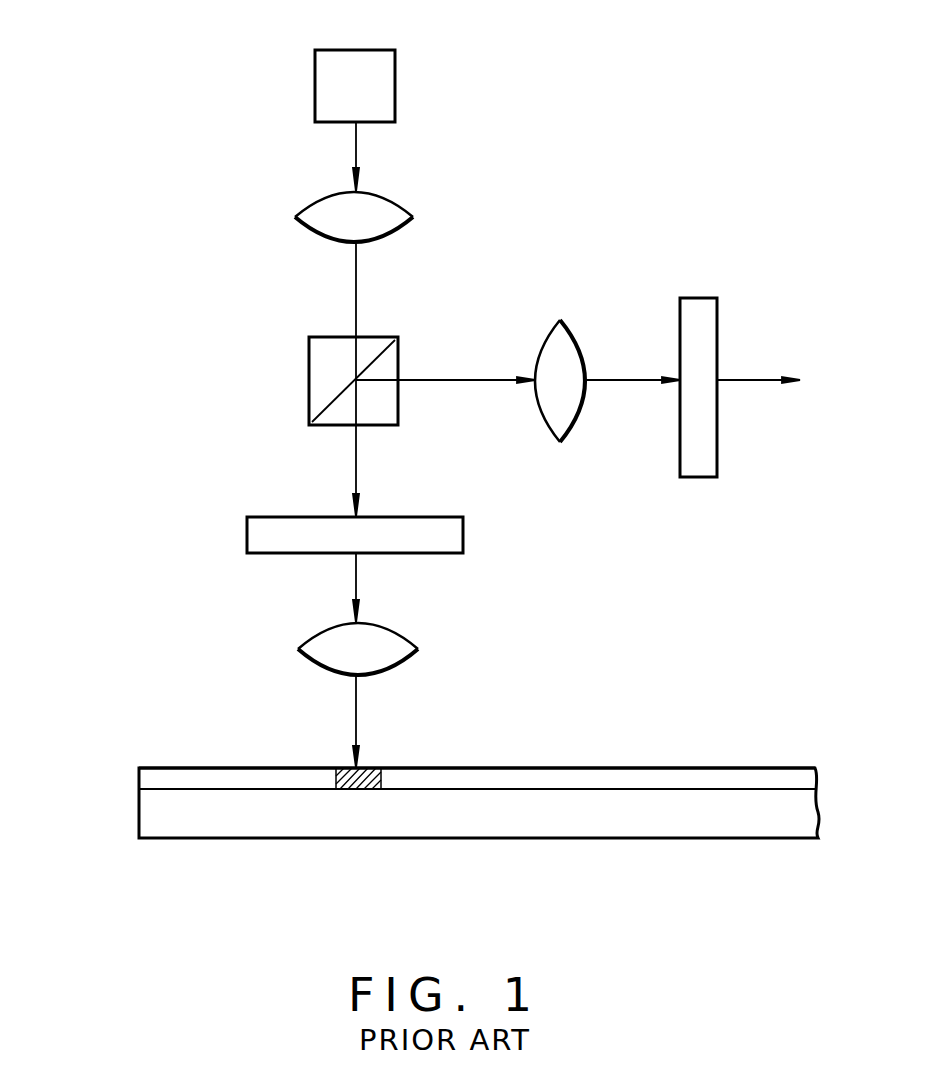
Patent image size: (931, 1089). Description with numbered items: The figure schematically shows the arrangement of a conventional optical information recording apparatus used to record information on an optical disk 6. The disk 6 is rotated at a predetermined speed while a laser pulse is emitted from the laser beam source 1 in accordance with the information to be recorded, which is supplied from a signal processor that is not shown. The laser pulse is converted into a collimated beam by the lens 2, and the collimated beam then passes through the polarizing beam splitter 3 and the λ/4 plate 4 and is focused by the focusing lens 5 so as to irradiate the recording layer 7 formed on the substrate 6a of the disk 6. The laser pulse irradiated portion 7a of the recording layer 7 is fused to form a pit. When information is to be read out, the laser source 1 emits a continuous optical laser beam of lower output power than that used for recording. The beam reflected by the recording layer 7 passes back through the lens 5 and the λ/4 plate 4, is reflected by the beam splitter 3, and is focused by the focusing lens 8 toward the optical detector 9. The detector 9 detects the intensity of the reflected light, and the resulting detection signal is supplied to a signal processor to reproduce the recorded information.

The laser beam source 1 is at (395, 78).
The lens 2 is at (395, 202).
The polarizing beam splitter 3 is at (380, 337).
The λ/4 plate 4 is at (420, 517).
The focusing lens 5 is at (405, 632).
The optical disk 6 is at (441, 806).
The substrate 6a is at (313, 838).
The recording layer 7 is at (192, 777).
The laser pulse irradiated portion 7a is at (363, 768).
The focusing lens 8 is at (580, 340).
The optical detector 9 is at (717, 337).